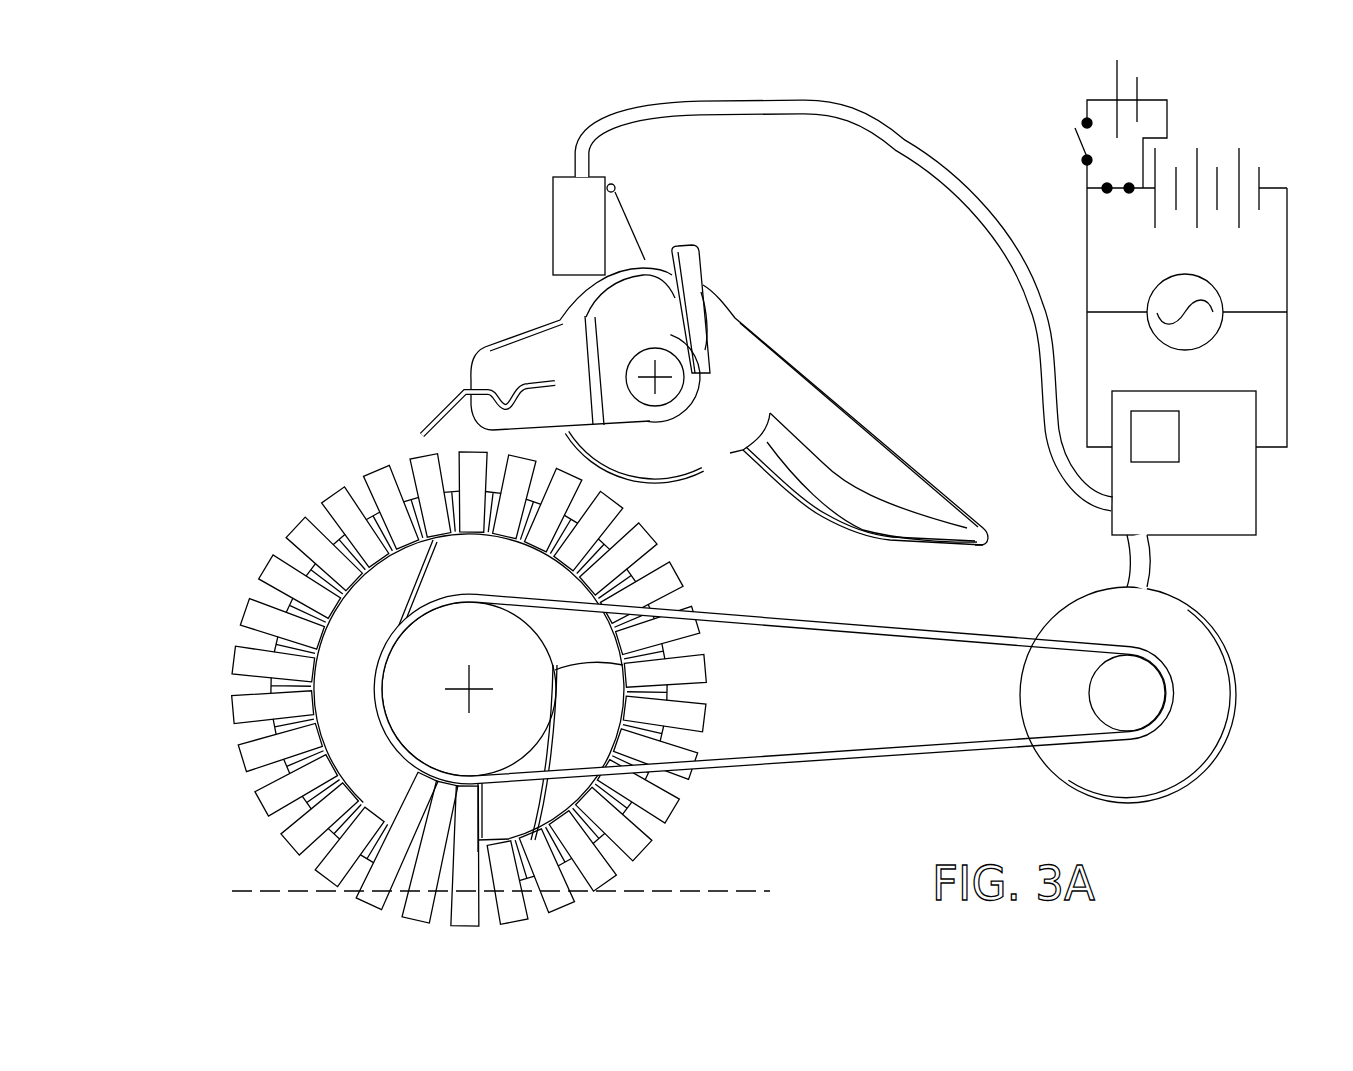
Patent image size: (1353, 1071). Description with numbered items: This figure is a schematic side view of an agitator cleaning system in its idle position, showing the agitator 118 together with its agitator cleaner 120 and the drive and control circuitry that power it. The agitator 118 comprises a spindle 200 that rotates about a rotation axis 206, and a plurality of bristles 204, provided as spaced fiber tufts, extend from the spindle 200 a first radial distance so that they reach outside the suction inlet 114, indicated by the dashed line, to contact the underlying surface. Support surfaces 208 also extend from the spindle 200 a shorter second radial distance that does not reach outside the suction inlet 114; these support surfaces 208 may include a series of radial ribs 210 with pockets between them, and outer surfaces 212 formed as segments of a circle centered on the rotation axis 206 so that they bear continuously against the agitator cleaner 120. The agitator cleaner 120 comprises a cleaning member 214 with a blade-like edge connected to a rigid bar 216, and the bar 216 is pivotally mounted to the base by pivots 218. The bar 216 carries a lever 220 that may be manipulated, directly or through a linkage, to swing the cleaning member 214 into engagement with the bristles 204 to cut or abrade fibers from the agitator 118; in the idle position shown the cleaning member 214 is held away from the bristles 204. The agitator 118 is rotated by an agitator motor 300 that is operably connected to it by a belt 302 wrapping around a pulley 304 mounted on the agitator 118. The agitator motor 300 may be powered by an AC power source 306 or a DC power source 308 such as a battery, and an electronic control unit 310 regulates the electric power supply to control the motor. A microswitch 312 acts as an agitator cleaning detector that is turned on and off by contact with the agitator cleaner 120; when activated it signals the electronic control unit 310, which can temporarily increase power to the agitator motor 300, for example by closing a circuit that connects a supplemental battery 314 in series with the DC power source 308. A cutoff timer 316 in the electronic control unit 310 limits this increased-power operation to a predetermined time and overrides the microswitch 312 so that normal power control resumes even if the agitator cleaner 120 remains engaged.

The suction inlet 114 is at (710, 885).
The agitator 118 is at (228, 640).
The agitator cleaner 120 is at (456, 331).
The spindle 200 is at (433, 650).
The bristles 204 is at (267, 802).
The rotation axis 206 is at (469, 689).
The support surfaces 208 is at (443, 562).
The radial ribs 210 is at (405, 585).
The outer surfaces 212 is at (467, 530).
The cleaning member 214 is at (435, 412).
The rigid bar 216 is at (663, 413).
The pivots 218 is at (655, 377).
The lever 220 is at (827, 413).
The agitator motor 300 is at (1203, 748).
The belt 302 is at (878, 745).
The pulley 304 is at (623, 665).
The AC power source 306 is at (1200, 338).
The DC power source 308 is at (1220, 150).
The electronic control unit 310 is at (1237, 490).
The microswitch 312 is at (572, 202).
The supplemental battery 314 is at (1102, 100).
The cutoff timer 316 is at (1147, 447).